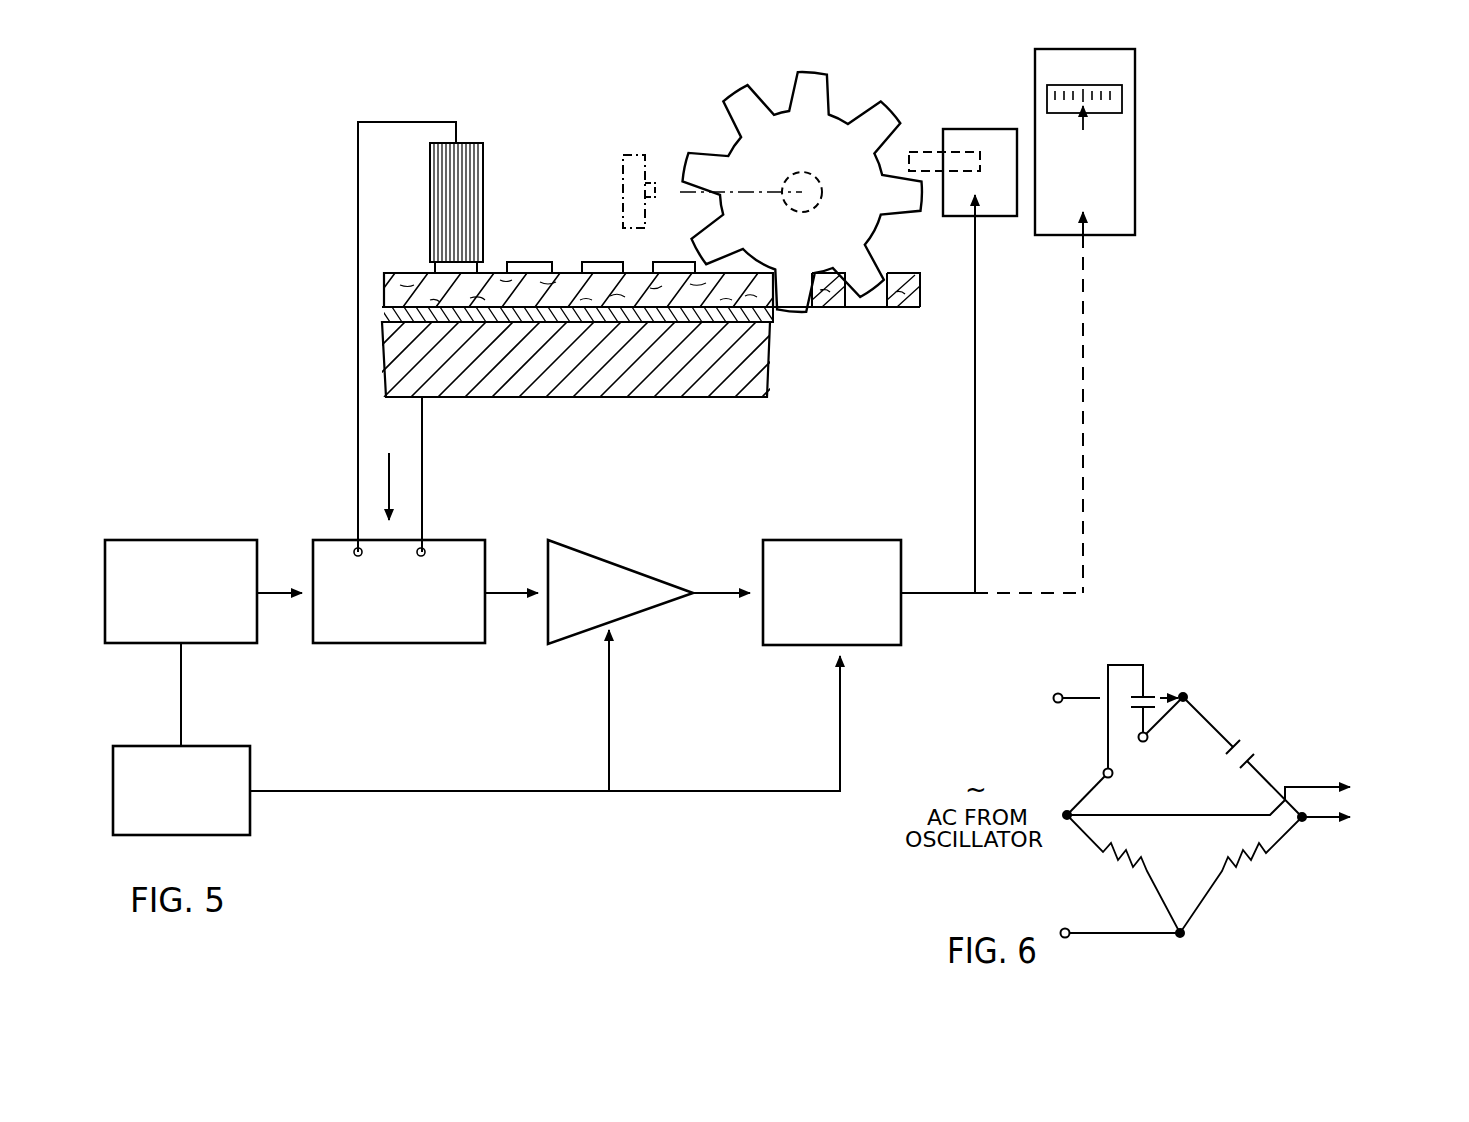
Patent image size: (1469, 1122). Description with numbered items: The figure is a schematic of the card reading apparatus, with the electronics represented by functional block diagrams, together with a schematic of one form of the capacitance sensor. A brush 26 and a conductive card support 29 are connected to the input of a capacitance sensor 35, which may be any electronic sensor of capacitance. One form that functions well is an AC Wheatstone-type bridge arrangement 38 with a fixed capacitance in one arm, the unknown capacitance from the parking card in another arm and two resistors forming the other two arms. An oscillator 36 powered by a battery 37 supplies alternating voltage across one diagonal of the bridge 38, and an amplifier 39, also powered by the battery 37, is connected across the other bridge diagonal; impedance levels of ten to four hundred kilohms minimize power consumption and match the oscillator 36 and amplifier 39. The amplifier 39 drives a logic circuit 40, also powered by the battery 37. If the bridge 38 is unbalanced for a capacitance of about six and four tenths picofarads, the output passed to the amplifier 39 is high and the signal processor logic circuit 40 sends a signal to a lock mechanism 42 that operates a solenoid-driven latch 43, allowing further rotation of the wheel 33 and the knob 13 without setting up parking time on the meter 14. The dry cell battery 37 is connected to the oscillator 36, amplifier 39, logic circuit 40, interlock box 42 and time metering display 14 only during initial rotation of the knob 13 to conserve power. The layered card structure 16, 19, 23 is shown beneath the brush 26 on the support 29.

In FIG. 5, the knob 13 is at (642, 163).
In FIG. 5, the meter 14 is at (1120, 178).
In FIG. 5, the dielectric layer 16 is at (560, 275).
In FIG. 5, the electrode 19 is at (478, 268).
In FIG. 5, the conductive layer 23 is at (773, 320).
In FIG. 5, the brush 26 is at (473, 182).
In FIG. 5, the conductive card support 29 is at (655, 387).
In FIG. 5, the wheel 33 is at (838, 128).
In FIG. 5, the capacitance sensor 35 is at (330, 550).
In FIG. 5, the oscillator 36 is at (184, 550).
In FIG. 5, the battery 37 is at (128, 752).
In FIG. 6, the Wheatstone-type bridge arrangement 38 is at (1213, 730).
In FIG. 5, the amplifier 39 is at (562, 555).
In FIG. 5, the logic circuit 40 is at (788, 552).
In FIG. 5, the lock mechanism 42 is at (993, 207).
In FIG. 5, the solenoid-driven latch 43 is at (927, 152).